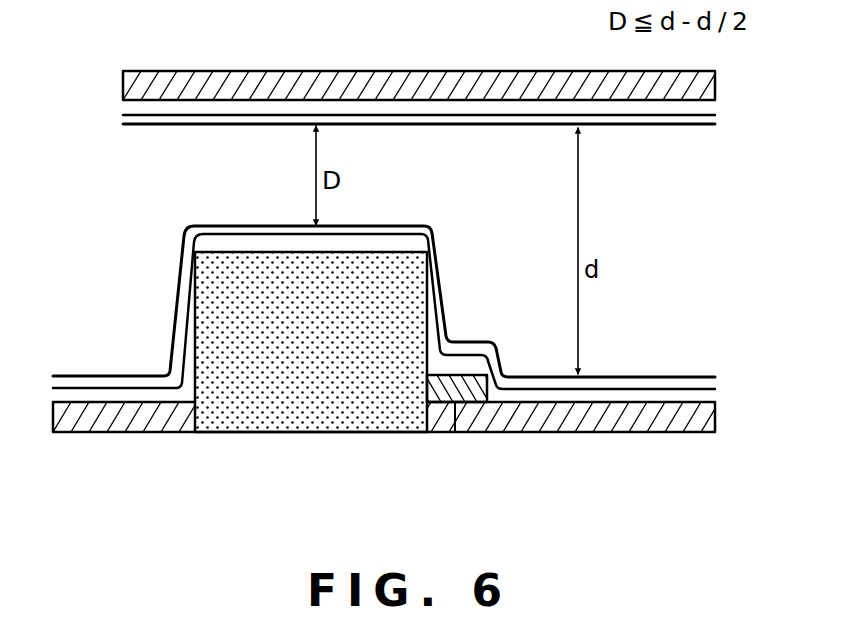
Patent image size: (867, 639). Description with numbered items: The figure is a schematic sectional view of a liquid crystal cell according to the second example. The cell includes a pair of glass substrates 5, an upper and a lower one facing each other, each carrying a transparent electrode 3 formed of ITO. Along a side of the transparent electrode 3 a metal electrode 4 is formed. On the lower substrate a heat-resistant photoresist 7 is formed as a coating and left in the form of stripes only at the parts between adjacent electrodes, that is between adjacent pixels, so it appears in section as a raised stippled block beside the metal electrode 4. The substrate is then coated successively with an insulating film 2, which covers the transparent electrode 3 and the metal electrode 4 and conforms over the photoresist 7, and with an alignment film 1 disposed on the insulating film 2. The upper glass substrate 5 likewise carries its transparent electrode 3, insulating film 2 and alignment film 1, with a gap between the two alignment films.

The alignment film 1 is at (123, 120).
The insulating film 2 is at (123, 107).
The transparent electrode 3 is at (123, 82).
The metal electrode 4 is at (455, 432).
The glass substrate 5 is at (173, 55).
The heat-resistant photoresist 7 is at (343, 412).